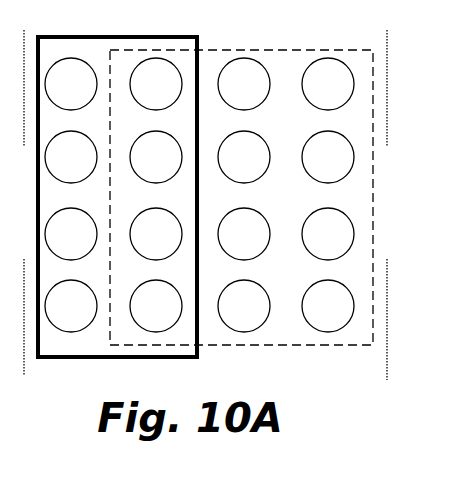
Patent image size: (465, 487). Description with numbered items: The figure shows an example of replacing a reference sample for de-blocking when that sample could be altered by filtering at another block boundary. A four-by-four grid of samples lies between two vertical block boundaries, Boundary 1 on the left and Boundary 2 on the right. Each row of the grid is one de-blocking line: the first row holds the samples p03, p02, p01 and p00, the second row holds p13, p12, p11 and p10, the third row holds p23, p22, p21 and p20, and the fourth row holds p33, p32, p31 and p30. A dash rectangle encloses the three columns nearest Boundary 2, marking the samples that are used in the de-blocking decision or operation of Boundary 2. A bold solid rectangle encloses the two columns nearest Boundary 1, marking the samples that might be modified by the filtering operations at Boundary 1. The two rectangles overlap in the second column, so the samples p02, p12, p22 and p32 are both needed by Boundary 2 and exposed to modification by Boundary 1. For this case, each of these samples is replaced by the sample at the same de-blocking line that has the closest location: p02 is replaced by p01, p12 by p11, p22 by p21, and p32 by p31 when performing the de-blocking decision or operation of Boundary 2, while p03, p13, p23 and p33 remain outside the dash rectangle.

The Boundary 1 is at (36, 203).
The Boundary 2 is at (399, 205).
The sample p00 is at (328, 84).
The sample p01 is at (244, 84).
The sample p02 is at (156, 84).
The sample p03 is at (71, 84).
The sample p10 is at (328, 157).
The sample p11 is at (244, 157).
The sample p12 is at (156, 157).
The sample p13 is at (71, 157).
The sample p20 is at (328, 234).
The sample p21 is at (244, 234).
The sample p22 is at (156, 234).
The sample p23 is at (71, 234).
The sample p30 is at (328, 306).
The sample p31 is at (244, 306).
The sample p32 is at (156, 306).
The sample p33 is at (71, 306).